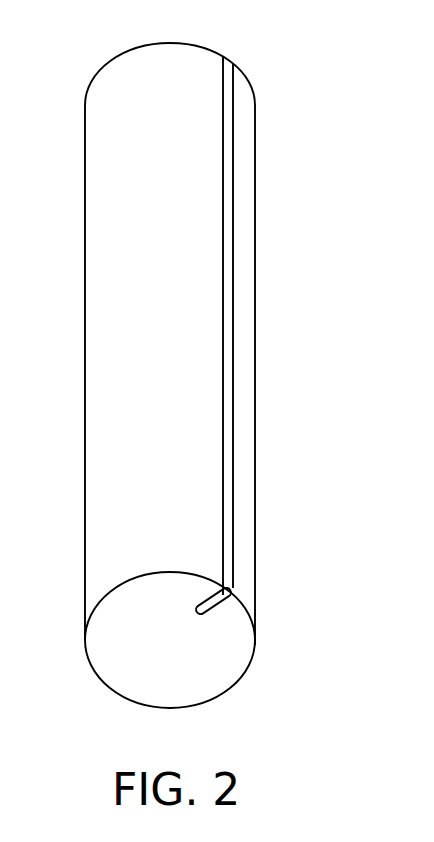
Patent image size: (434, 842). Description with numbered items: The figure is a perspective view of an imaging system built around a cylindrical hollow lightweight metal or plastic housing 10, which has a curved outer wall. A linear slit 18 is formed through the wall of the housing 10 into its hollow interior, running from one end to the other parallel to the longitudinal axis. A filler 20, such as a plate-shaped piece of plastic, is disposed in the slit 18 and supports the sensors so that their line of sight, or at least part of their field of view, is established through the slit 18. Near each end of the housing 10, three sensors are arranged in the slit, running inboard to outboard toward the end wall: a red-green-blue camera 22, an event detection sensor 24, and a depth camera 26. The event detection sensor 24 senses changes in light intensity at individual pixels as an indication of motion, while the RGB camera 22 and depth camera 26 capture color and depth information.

The housing 10 is at (108, 381).
The linear slit 18 is at (213, 612).
The filler 20 is at (225, 338).
The red-green-blue (RGB) camera 22 is at (233, 212).
The event detection sensor (EDS) 24 is at (233, 177).
The depth camera (6DoF) 26 is at (233, 134).